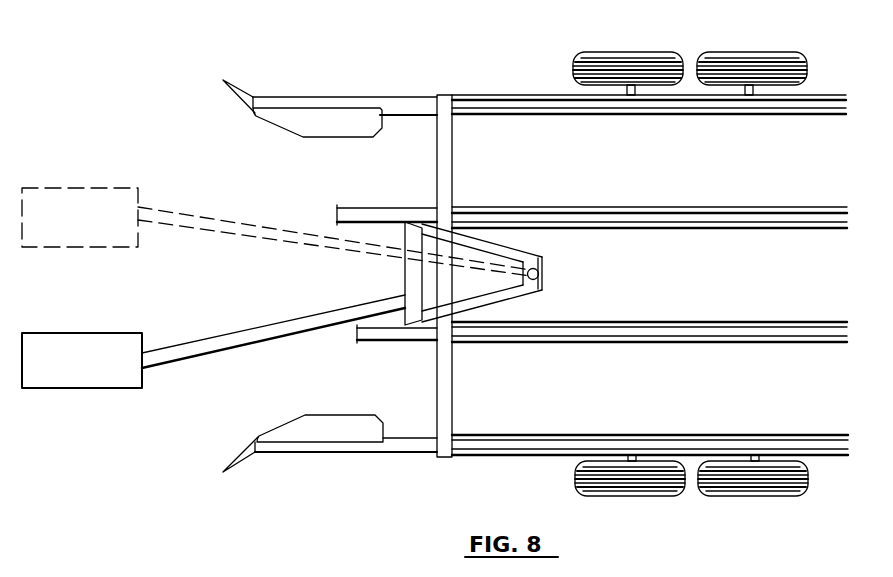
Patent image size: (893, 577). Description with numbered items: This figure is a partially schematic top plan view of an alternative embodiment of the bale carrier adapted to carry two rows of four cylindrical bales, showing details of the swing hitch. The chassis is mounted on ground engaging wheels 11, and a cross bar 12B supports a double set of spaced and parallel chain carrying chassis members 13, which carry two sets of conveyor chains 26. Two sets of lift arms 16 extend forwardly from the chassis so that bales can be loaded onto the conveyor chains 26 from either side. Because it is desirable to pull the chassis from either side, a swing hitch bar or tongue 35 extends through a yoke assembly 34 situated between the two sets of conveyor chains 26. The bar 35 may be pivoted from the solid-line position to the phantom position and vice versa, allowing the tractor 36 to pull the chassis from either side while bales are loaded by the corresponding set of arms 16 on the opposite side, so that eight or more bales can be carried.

The ground engaging wheels 11 is at (603, 51).
The cross bar 12B is at (480, 276).
The chain carrying chassis members 13 is at (822, 93).
The lift arms 16 is at (310, 110).
The conveyor chains 26 is at (642, 102).
The yoke assembly 34 is at (527, 295).
The swing hitch bar 35 is at (262, 325).
The tractor 36 is at (93, 330).